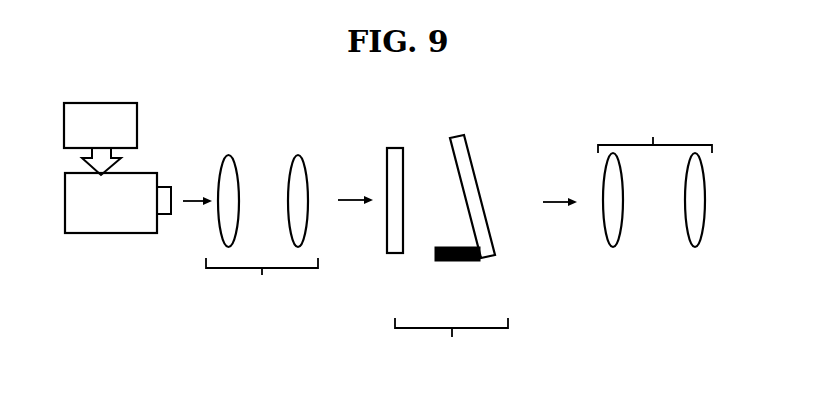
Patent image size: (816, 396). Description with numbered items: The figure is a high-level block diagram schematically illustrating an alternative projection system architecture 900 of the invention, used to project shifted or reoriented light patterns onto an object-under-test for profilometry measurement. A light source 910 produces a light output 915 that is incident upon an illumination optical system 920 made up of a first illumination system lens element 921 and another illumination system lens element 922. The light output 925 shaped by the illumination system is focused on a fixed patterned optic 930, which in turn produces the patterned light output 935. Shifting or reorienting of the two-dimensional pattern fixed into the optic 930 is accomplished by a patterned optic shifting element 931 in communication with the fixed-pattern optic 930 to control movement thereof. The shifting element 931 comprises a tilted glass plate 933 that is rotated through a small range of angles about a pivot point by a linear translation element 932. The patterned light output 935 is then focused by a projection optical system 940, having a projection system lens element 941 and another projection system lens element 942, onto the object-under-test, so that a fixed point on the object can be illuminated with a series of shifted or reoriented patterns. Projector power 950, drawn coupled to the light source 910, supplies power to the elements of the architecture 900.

The projection system architecture 900 is at (159, 321).
The light source 910 is at (128, 233).
The light output from light source 915 is at (192, 196).
The illumination optical system 920 is at (242, 209).
The illumination system lens element 921 is at (226, 156).
The another illumination system lens element 922 is at (297, 155).
The light output shaped by illumination system 925 is at (362, 194).
The fixed patterned optic 930 is at (392, 148).
The patterned optic shifting element 931 is at (451, 225).
The linear translation element 932 is at (445, 262).
The glass plate 933 is at (460, 135).
The patterned light output 935 is at (554, 198).
The projection optical system 940 is at (647, 210).
The projection system lens element 941 is at (611, 246).
The another projection system lens element 942 is at (692, 246).
The projector power 950 is at (117, 103).